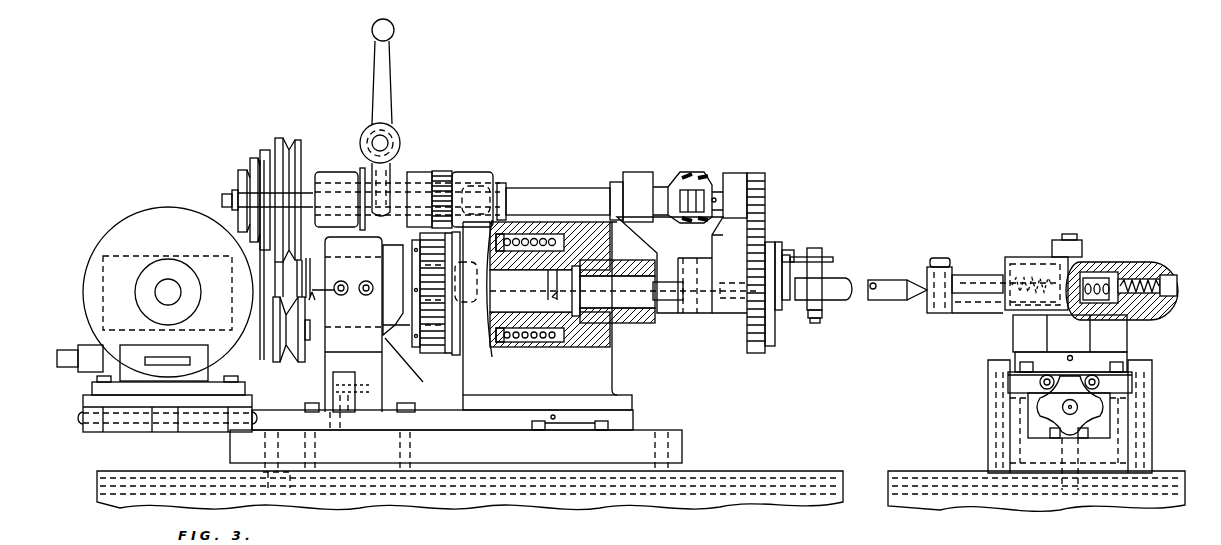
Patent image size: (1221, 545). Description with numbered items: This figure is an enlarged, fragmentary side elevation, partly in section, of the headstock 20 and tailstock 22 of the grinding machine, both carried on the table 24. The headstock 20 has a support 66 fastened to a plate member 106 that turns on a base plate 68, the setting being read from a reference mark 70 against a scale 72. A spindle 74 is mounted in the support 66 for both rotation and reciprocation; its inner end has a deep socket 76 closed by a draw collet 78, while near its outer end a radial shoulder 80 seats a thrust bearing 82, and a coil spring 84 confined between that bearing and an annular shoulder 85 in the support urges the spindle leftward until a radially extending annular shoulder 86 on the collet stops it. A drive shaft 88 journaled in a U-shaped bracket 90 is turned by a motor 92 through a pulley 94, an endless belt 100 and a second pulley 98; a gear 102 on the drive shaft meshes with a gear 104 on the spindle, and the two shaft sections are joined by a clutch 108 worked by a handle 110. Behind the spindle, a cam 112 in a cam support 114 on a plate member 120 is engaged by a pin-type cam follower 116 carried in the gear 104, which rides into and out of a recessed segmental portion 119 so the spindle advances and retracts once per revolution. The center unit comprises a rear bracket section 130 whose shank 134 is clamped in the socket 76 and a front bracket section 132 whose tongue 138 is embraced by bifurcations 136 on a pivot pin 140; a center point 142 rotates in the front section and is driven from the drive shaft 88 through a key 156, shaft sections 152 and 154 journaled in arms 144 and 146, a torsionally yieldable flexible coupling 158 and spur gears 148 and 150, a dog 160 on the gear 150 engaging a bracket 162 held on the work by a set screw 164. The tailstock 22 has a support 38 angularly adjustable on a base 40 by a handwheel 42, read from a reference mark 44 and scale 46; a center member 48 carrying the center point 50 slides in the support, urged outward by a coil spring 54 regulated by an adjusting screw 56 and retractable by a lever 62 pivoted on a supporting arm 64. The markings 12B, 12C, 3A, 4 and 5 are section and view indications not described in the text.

The headstock 20 is at (258, 114).
The tailstock 22 is at (1083, 228).
The table 24 is at (766, 478).
The support 38 is at (1142, 264).
The base 40 is at (1156, 410).
The handwheel 42 is at (1112, 394).
The reference mark 44 is at (1073, 372).
The scale 46 is at (1022, 364).
The center member 48 is at (952, 276).
The center point 50 is at (910, 278).
The coil spring 54 is at (1100, 276).
The adjusting screw 56 is at (1166, 280).
The lever 62 is at (1055, 244).
The supporting arm 64 is at (1085, 265).
The support 66 is at (614, 362).
The base plate 68 is at (672, 450).
The reference mark 70 is at (550, 422).
The scale 72 is at (586, 426).
The spindle 74 is at (515, 250).
The socket 76 is at (540, 292).
The draw collet 78 is at (640, 268).
The radial shoulder 80 is at (505, 347).
The thrust bearing 82 is at (525, 347).
The coil spring 84 is at (545, 344).
The annular shoulder 85 is at (562, 344).
The annular shoulder 86 is at (602, 344).
The drive shaft 88 is at (230, 194).
The U-shaped bracket 90 is at (482, 176).
The motor 92 is at (130, 224).
The pulley 94 is at (290, 378).
The second pulley 98 is at (255, 172).
The endless belt 100 is at (268, 246).
The gear 102 is at (446, 170).
The gear 104 is at (435, 246).
The plate member 106 is at (626, 421).
The clutch 108 is at (404, 182).
The handle 110 is at (384, 82).
The cam 112 is at (395, 258).
The cam support 114 is at (353, 324).
The cam follower 116 is at (398, 328).
The recessed segmental portion 119 is at (445, 312).
The plate member 120 is at (418, 406).
The screws 12B is at (420, 280).
The spline 12C is at (352, 412).
The rear bracket section 130 is at (658, 313).
The front bracket section 132 is at (716, 314).
The shank 134 is at (617, 291).
The bifurcations 136 is at (700, 275).
The tongue 138 is at (668, 291).
The pivot pin 140 is at (720, 282).
The center point 142 is at (782, 300).
The arm 144 is at (636, 173).
The arm 146 is at (748, 174).
The spur gear 148 is at (770, 186).
The spur gear 150 is at (786, 250).
The shaft section 152 is at (560, 190).
The shaft section 154 is at (700, 190).
The key 156 is at (505, 182).
The flexible coupling 158 is at (686, 176).
The dog 160 is at (834, 259).
The bracket 162 is at (815, 248).
The set screw 164 is at (824, 314).
The shaft 3A is at (840, 282).
The section line 4 is at (312, 279).
The section line 5 is at (401, 241).